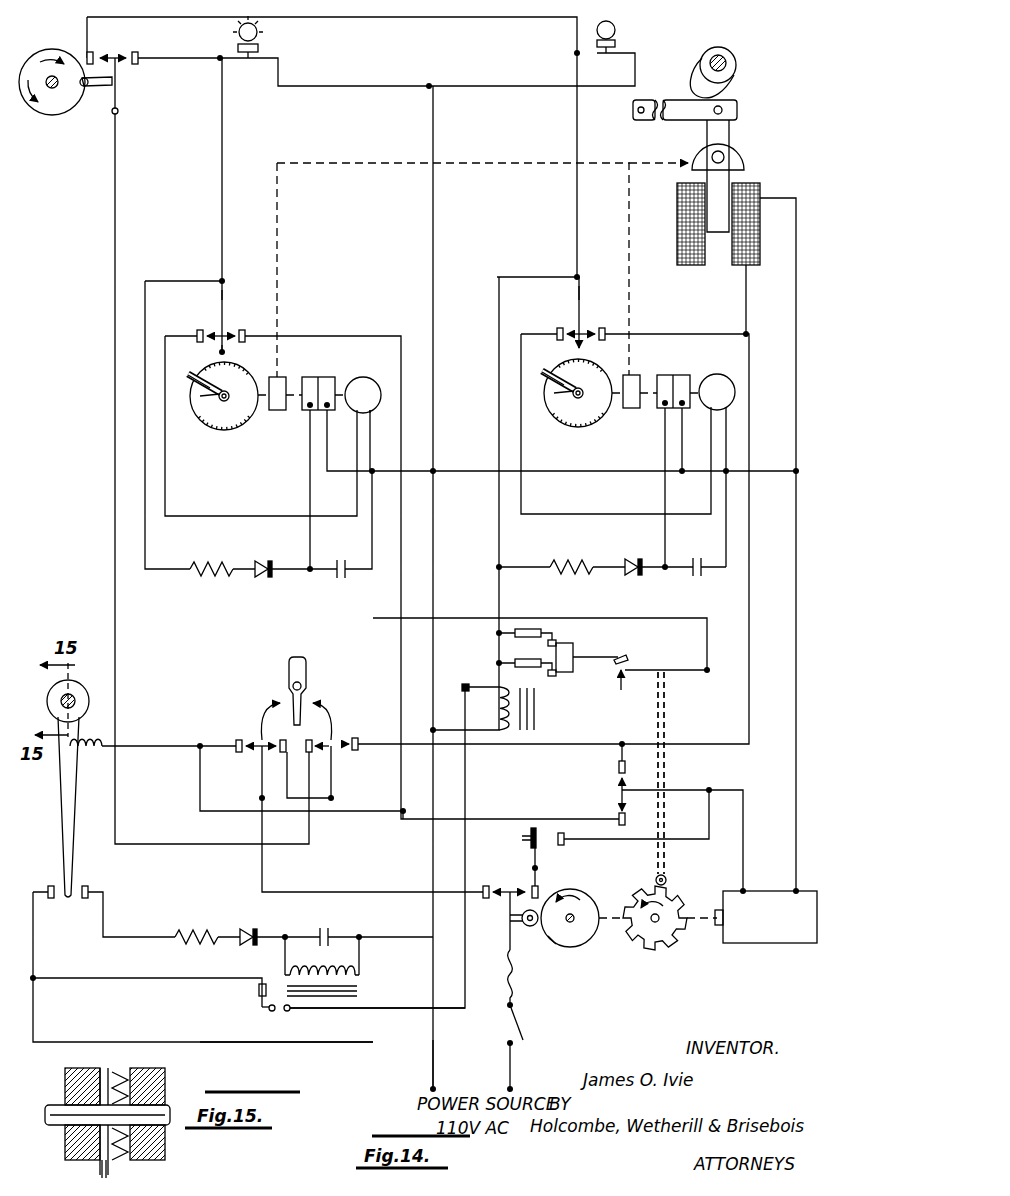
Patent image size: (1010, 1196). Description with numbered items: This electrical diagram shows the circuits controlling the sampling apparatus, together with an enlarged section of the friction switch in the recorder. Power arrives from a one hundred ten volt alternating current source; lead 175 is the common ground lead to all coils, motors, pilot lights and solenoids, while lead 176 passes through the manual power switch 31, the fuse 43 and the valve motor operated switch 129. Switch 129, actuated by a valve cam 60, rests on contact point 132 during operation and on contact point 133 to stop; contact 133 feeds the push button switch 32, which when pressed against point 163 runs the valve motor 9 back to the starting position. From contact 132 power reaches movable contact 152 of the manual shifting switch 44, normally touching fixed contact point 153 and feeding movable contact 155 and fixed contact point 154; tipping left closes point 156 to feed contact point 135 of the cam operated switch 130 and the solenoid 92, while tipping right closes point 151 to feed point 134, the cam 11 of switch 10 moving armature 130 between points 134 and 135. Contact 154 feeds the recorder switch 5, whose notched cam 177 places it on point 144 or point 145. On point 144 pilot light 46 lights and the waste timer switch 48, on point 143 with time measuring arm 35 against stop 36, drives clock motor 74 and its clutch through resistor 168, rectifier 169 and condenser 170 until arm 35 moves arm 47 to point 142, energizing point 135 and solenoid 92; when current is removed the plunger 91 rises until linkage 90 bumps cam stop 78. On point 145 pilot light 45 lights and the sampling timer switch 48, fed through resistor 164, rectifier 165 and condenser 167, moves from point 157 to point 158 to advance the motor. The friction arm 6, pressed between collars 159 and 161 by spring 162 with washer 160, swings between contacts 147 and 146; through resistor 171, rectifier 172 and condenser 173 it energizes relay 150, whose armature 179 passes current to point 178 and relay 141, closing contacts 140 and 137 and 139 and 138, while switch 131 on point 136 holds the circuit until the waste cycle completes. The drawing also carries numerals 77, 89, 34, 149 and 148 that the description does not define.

In FIG. 14, the notched cam 177 is at (33, 62).
In FIG. 14, the recorder switch armature 5 is at (108, 84).
In FIG. 14, the contact point 144 is at (93, 54).
In FIG. 14, the contact point 145 is at (138, 63).
In FIG. 14, the pilot light 45 is at (259, 33).
In FIG. 14, the pilot light 46 is at (614, 28).
In FIG. 14, the cam shaft 77 is at (711, 62).
In FIG. 14, the cam stop 78 is at (738, 72).
In FIG. 14, the link bar 89 is at (661, 116).
In FIG. 14, the linkage 90 is at (730, 128).
In FIG. 14, the plunger 91 is at (732, 152).
In FIG. 14, the solenoid 92 is at (755, 196).
In FIG. 14, the timer switch 48 is at (222, 312).
In FIG. 14, the contact point 158 is at (242, 330).
In FIG. 14, the contact point 157 is at (201, 342).
In FIG. 14, the arm 47 is at (226, 356).
In FIG. 14, the clock motor 74 is at (366, 377).
In FIG. 14, the time measuring arm 35 is at (190, 374).
In FIG. 14, the stop 36 is at (200, 398).
In FIG. 14, the timer dial 34 is at (222, 398).
In FIG. 14, the contact point 143 is at (560, 328).
In FIG. 14, the contact point 142 is at (602, 328).
In FIG. 14, the resistor 164 is at (212, 574).
In FIG. 14, the rectifier 165 is at (261, 578).
In FIG. 14, the condenser 167 is at (342, 578).
In FIG. 14, the resistor 168 is at (568, 560).
In FIG. 14, the rectifier 169 is at (634, 560).
In FIG. 14, the condenser 170 is at (698, 560).
In FIG. 14, the relay contact 139 is at (553, 632).
In FIG. 14, the relay contact 140 is at (553, 662).
In FIG. 14, the contact point 138 is at (560, 642).
In FIG. 14, the contact point 137 is at (553, 674).
In FIG. 14, the contact point 136 is at (628, 658).
In FIG. 14, the switch 131 is at (621, 676).
In FIG. 14, the relay 141 is at (500, 716).
In FIG. 14, the contact point 178 is at (466, 684).
In FIG. 14, the contact point 135 is at (619, 766).
In FIG. 14, the cam operated switch armature 130 is at (618, 792).
In FIG. 14, the fixed contact point 134 is at (618, 816).
In FIG. 14, the contact point 163 is at (563, 846).
In FIG. 14, the push button switch 32 is at (526, 838).
In FIG. 14, the contact point 132 is at (486, 886).
In FIG. 14, the contact point 133 is at (537, 888).
In FIG. 14, the valve motor operated switch 129 is at (508, 918).
In FIG. 14, the valve cam 60 is at (578, 946).
In FIG. 14, the cam 11 is at (670, 946).
In FIG. 14, the cam operated switch 10 is at (664, 862).
In FIG. 14, the valve motor 9 is at (779, 944).
In FIG. 14, the fuse 43 is at (513, 972).
In FIG. 14, the manual power switch 31 is at (518, 1024).
In FIG. 14, the lead 176 is at (514, 1068).
In FIG. 14, the lead 175 is at (433, 1052).
In FIG. 14, the manual shifting switch 44 is at (306, 670).
In FIG. 14, the movable contact 152 is at (254, 740).
In FIG. 14, the movable contact 155 is at (328, 718).
In FIG. 14, the fixed contact point 156 is at (355, 738).
In FIG. 14, the fixed contact point 151 is at (239, 753).
In FIG. 14, the fixed contact point 153 is at (284, 752).
In FIG. 14, the fixed contact point 154 is at (309, 752).
In FIG. 14, the friction switch arm 6 is at (64, 796).
In FIG. 15, the friction switch arm 6 is at (100, 1172).
In FIG. 14, the contact point 146 is at (51, 886).
In FIG. 14, the contact point 147 is at (86, 886).
In FIG. 14, the resistor 171 is at (190, 932).
In FIG. 14, the rectifier 172 is at (245, 930).
In FIG. 14, the condenser 173 is at (324, 928).
In FIG. 14, the relay 150 is at (336, 972).
In FIG. 14, the relay core 149 is at (292, 984).
In FIG. 14, the relay armature 179 is at (259, 990).
In FIG. 14, the conductor 148 is at (345, 1042).
In FIG. 15, the collar 159 is at (66, 1086).
In FIG. 15, the washer 160 is at (108, 1070).
In FIG. 15, the collar 161 is at (160, 1076).
In FIG. 15, the spring 162 is at (115, 1160).